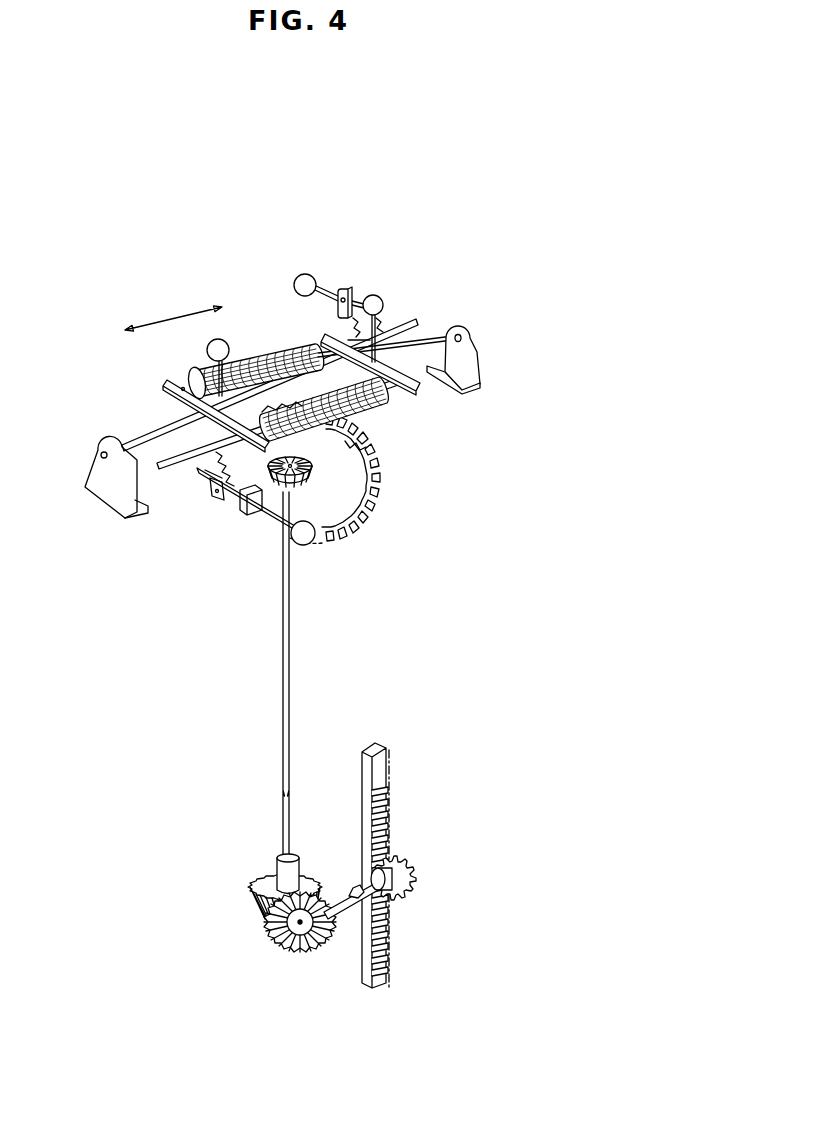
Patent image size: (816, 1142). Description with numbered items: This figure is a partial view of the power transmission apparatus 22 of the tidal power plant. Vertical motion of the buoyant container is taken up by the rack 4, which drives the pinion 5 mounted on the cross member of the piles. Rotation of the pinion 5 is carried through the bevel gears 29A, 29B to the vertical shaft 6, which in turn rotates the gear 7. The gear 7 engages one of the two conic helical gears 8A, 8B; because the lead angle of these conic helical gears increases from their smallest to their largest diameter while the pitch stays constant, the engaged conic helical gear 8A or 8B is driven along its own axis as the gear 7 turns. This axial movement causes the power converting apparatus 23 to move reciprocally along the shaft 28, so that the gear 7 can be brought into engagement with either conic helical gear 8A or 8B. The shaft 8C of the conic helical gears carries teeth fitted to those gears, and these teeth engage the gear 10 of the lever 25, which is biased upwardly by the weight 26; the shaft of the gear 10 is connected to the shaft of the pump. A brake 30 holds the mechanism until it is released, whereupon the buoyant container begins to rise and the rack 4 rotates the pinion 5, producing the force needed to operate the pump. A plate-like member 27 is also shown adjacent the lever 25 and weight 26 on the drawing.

The power transmission apparatus 22 is at (510, 210).
The power converting apparatus 23 is at (390, 378).
The lever 25 is at (328, 293).
The weight 26 is at (303, 273).
The plate 27 is at (378, 296).
The shaft 28 is at (158, 436).
The conic helical gear 8A is at (380, 412).
The conic helical gear 8B is at (258, 368).
The shaft 8C is at (165, 470).
The gear 7 is at (345, 495).
The gear 10 is at (208, 472).
The brake 30 is at (220, 498).
The vertical shaft 6 is at (285, 694).
The rack 4 is at (388, 815).
The pinion 5 is at (412, 864).
The bevel gear 29A is at (310, 957).
The bevel gear 29B is at (263, 906).